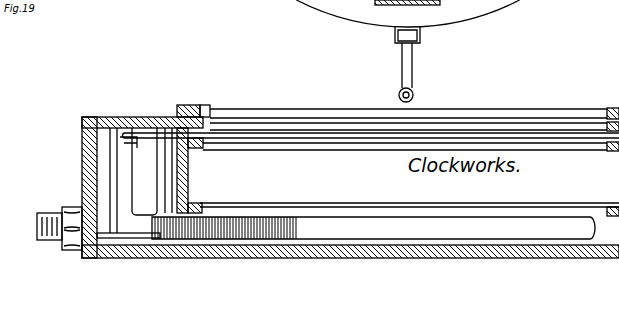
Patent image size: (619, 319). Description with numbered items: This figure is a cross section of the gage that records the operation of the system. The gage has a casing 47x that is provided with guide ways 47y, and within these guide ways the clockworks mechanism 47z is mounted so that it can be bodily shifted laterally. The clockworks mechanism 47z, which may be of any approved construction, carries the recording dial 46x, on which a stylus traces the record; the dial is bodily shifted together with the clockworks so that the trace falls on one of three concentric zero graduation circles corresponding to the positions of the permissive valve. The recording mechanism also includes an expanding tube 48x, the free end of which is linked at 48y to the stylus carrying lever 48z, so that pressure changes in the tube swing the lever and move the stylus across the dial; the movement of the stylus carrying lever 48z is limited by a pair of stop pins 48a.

The casing 47x is at (98, 117).
The guide ways 47y is at (214, 108).
The clockworks mechanism 47z is at (567, 158).
The stop pins 48a is at (191, 108).
The stylus carrying lever 48z is at (263, 133).
The recording dial 46x is at (545, 134).
The link 48y is at (149, 201).
The expanding tube 48x is at (378, 217).